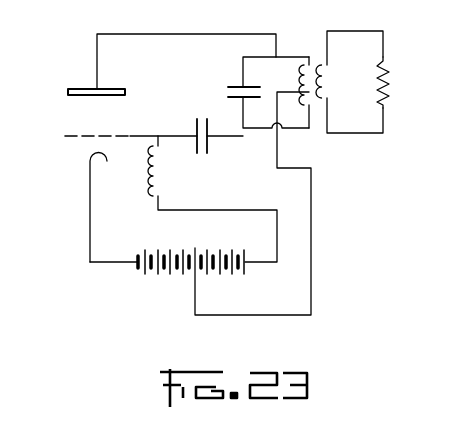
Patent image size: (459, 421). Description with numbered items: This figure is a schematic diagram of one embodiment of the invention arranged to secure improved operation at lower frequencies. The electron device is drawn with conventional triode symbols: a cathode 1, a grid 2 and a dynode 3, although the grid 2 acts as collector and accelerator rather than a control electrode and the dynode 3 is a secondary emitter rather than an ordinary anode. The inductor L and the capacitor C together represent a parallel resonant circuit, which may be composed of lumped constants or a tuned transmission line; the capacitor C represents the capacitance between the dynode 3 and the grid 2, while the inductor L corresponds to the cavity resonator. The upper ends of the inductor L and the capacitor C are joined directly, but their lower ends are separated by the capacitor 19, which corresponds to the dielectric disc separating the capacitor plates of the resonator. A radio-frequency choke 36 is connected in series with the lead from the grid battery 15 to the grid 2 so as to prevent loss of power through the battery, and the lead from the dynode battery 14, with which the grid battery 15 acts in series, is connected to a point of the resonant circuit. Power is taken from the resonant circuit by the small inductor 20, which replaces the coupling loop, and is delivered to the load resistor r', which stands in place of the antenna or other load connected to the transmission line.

The cathode 1 is at (84, 155).
The grid 2 is at (76, 139).
The dynode 3 is at (74, 86).
The dynode battery 14 is at (166, 283).
The grid battery 15 is at (216, 276).
The capacitor 19 is at (203, 119).
The small inductor 20 is at (345, 76).
The radio-frequency choke 36 is at (166, 162).
The capacitance C is at (229, 92).
The inductor L is at (312, 60).
The load resistor r' is at (392, 82).